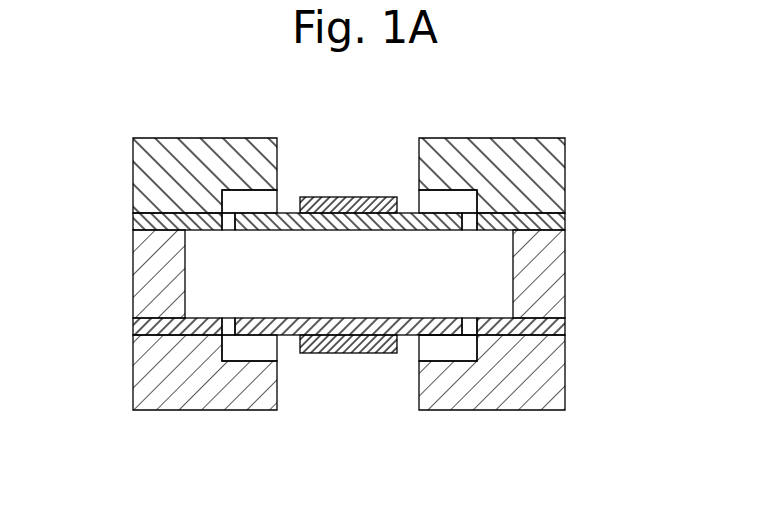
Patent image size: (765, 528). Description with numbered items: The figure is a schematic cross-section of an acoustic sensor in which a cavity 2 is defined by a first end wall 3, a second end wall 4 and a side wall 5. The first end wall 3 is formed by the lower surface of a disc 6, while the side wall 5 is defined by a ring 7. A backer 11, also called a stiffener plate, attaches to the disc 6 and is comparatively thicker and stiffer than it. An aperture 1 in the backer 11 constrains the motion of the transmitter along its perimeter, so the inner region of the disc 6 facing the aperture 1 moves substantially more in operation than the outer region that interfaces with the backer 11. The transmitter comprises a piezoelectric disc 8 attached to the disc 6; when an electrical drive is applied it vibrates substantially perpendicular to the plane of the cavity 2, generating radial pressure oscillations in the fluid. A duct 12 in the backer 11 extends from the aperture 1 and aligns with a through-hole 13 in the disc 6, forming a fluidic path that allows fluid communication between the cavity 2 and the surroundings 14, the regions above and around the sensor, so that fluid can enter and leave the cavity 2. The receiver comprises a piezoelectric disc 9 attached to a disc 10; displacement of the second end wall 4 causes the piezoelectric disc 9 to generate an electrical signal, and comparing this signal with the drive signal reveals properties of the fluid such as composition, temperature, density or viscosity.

The aperture 1 is at (330, 158).
The cavity 2 is at (470, 280).
The first end wall 3 is at (430, 232).
The second end wall 4 is at (440, 317).
The side wall 5 is at (185, 290).
The disc 6 is at (289, 210).
The ring 7 is at (160, 287).
The piezoelectric disc 8 is at (365, 210).
The piezoelectric disc 9 is at (350, 353).
The disc 10 is at (190, 388).
The backer 11 is at (170, 167).
The duct 12 is at (243, 200).
The through-hole 13 is at (232, 231).
The surroundings 14 is at (605, 367).